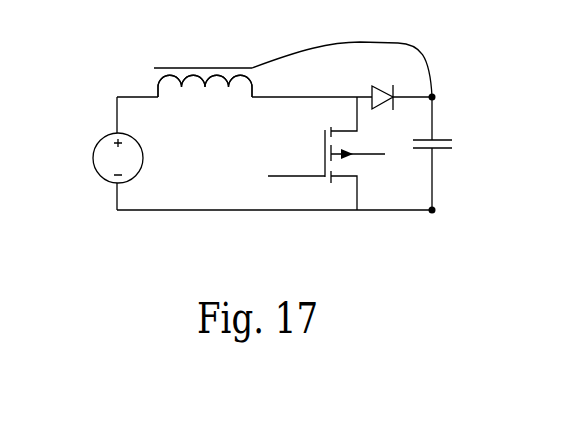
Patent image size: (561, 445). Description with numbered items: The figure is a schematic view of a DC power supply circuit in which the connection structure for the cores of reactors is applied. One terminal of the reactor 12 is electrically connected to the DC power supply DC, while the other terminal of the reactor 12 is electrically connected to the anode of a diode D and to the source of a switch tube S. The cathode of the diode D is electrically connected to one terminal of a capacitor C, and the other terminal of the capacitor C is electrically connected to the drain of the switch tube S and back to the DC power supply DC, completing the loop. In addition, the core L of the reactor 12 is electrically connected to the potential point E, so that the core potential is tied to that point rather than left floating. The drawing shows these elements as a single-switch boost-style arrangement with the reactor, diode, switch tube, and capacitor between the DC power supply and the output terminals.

The reactor 12 is at (158, 86).
The core L is at (212, 68).
The diode D is at (390, 84).
The switch tube S is at (326, 153).
The capacitor C is at (436, 153).
The potential point E is at (444, 154).
The DC power supply DC is at (100, 158).